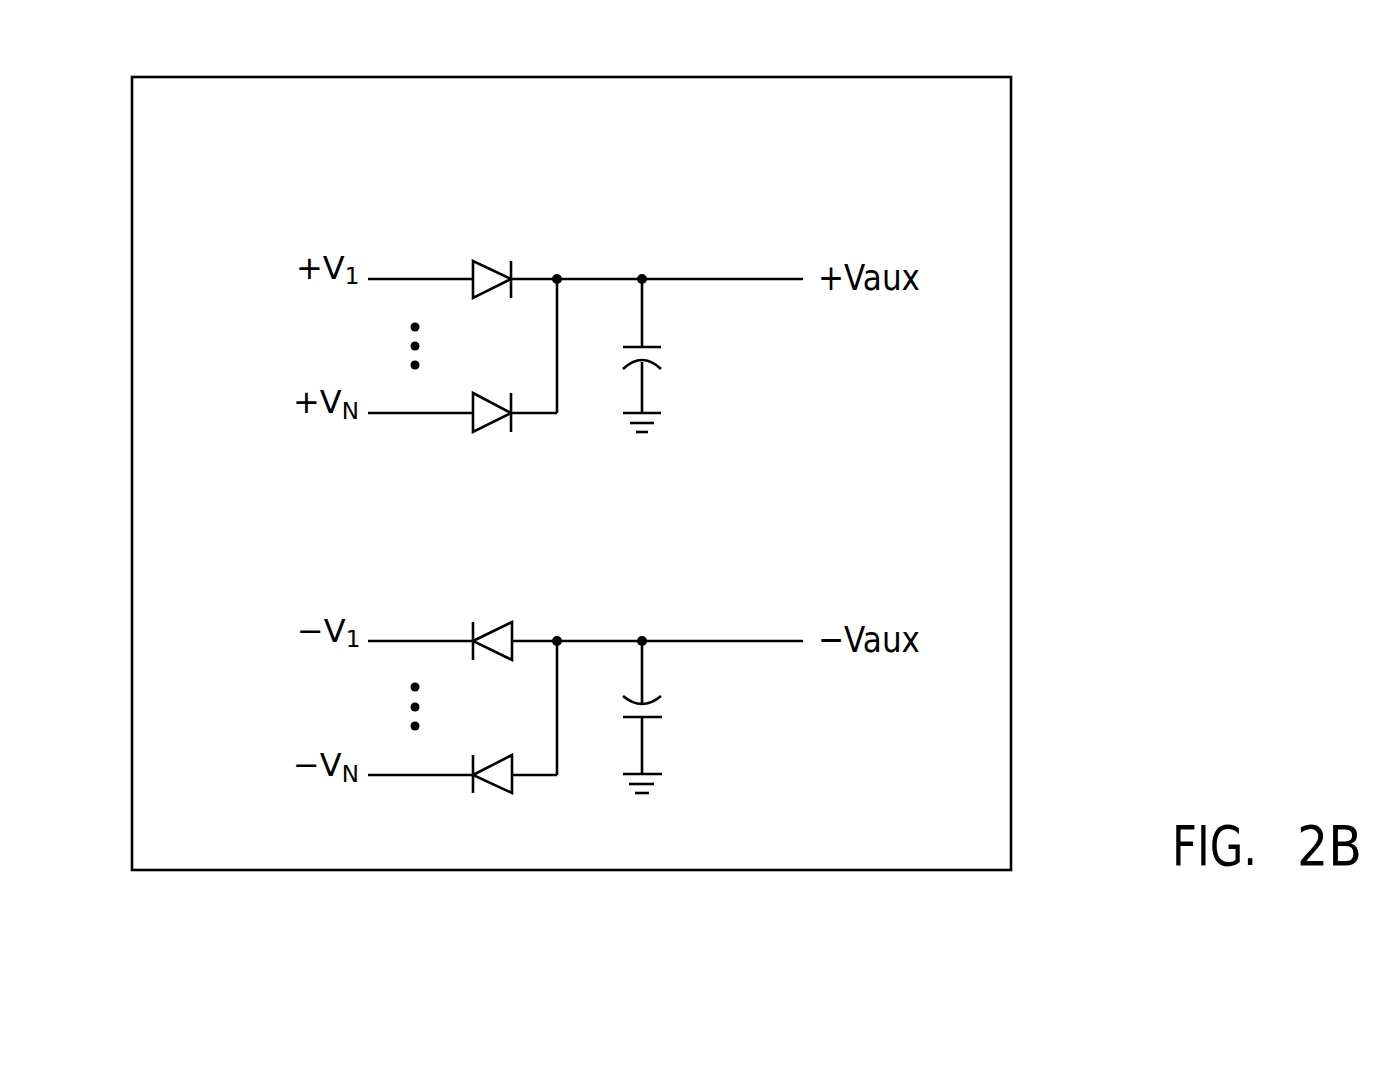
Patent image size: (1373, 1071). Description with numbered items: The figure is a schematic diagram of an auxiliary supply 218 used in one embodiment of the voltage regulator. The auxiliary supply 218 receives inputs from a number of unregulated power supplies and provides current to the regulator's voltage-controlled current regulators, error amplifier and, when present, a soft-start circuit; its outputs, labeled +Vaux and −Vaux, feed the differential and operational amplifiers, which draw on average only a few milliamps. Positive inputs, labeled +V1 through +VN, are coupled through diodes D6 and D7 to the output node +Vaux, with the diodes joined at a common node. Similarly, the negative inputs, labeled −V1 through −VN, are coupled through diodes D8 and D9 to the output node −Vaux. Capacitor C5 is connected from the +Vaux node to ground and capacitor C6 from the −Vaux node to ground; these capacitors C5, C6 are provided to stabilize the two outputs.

The auxiliary supply 218 is at (331, 75).
The diode D6 is at (497, 255).
The diode D7 is at (497, 437).
The diode D8 is at (497, 617).
The diode D9 is at (497, 798).
The capacitor C5 is at (671, 355).
The capacitor C6 is at (671, 717).